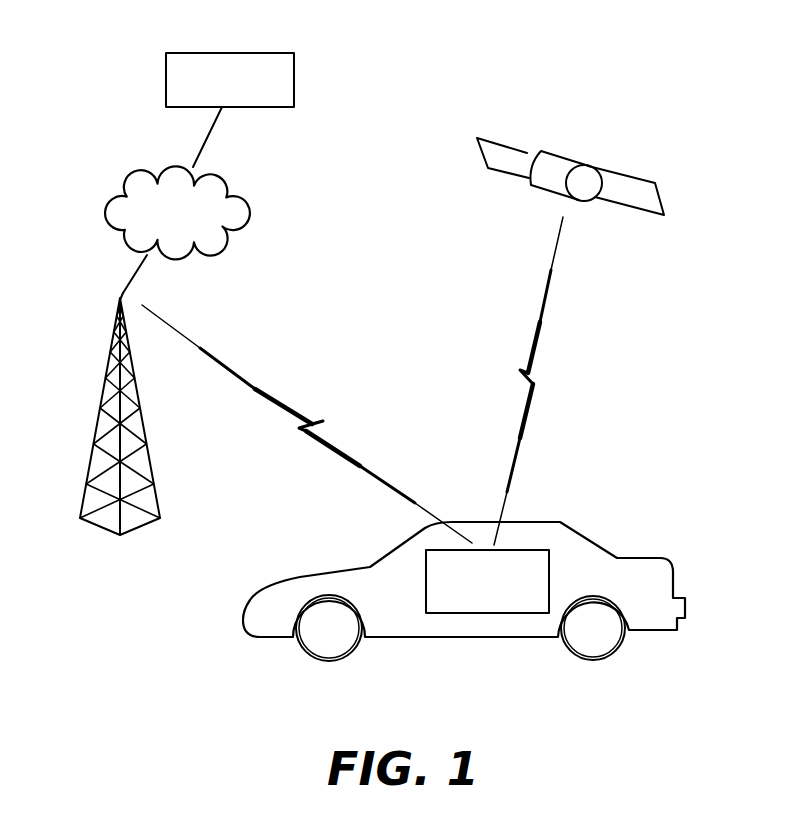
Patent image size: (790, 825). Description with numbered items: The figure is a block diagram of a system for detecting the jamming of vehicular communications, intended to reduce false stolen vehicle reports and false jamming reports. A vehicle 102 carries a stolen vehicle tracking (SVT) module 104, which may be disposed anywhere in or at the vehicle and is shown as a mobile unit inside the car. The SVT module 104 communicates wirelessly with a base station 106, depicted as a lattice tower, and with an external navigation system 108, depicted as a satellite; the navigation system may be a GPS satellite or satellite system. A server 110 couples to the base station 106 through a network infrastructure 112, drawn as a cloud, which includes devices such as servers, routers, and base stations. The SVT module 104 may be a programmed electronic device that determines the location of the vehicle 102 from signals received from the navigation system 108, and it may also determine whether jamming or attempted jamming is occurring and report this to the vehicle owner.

The vehicle 102 is at (638, 558).
The stolen vehicle tracking (SVT) module 104 is at (527, 550).
The base station 106 is at (110, 358).
The external navigation system 108 is at (567, 153).
The server 110 is at (273, 53).
The network infrastructure 112 is at (223, 177).